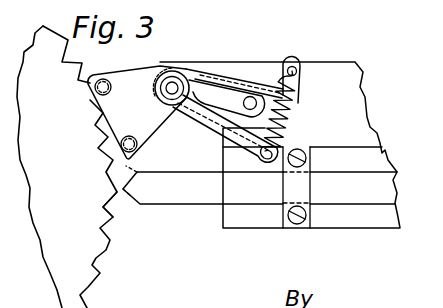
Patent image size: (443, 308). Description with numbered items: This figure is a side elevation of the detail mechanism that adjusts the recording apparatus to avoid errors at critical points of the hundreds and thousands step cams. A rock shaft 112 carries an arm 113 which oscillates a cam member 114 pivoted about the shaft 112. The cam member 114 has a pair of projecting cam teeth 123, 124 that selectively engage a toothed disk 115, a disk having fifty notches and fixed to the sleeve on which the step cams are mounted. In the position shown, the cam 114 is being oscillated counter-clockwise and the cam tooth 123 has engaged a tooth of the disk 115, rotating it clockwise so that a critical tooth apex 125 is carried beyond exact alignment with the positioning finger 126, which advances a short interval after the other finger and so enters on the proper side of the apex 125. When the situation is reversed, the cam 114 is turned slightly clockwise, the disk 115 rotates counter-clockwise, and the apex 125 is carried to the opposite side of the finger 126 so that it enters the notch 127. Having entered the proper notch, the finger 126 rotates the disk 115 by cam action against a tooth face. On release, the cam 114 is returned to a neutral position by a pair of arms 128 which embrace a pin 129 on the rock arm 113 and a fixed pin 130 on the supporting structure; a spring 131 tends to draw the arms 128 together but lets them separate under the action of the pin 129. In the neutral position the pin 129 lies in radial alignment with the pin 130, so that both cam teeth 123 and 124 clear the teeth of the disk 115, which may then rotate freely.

The rock shaft 112 is at (172, 87).
The arm 113 is at (223, 96).
The cam member 114 is at (137, 112).
The toothed disk 115 is at (63, 257).
The cam tooth 123 is at (96, 88).
The cam tooth 124 is at (121, 143).
The tooth apex 125 is at (115, 193).
The positioning finger 126 is at (260, 185).
The notch 127 is at (107, 207).
The arms 128 is at (270, 80).
The pin 129 is at (250, 97).
The fixed pin 130 is at (288, 129).
The spring 131 is at (289, 115).